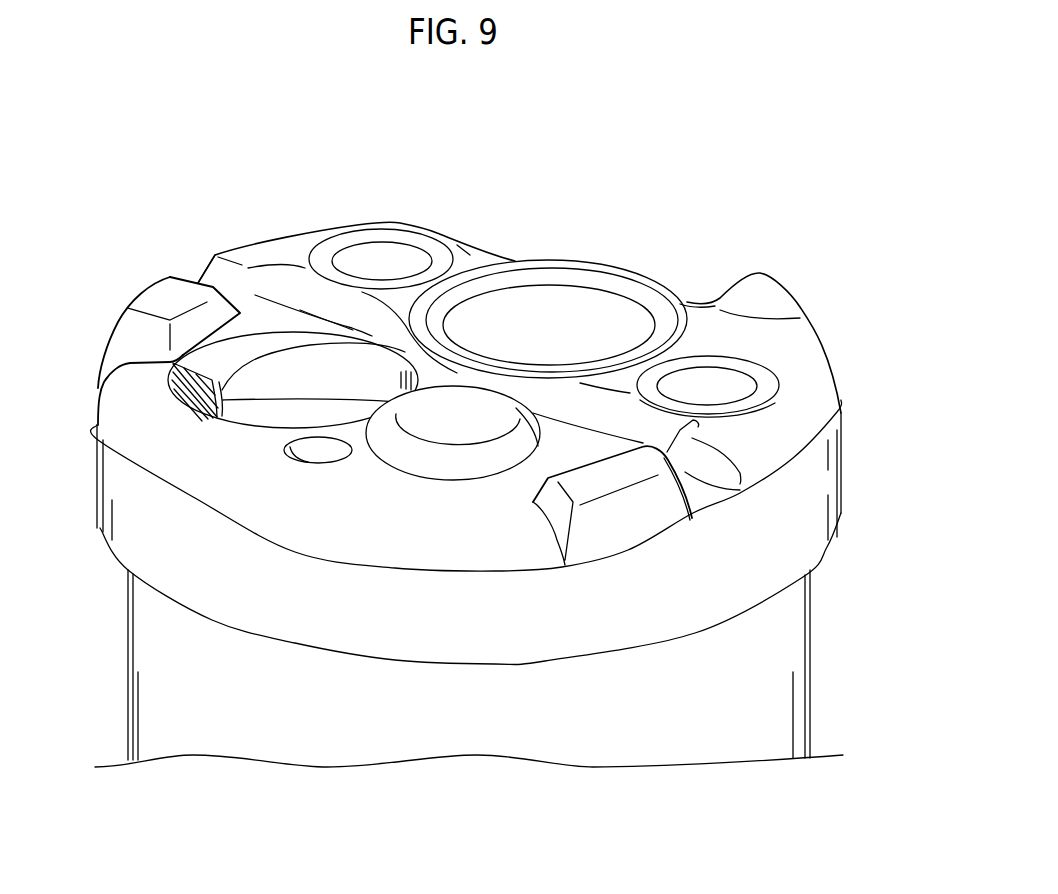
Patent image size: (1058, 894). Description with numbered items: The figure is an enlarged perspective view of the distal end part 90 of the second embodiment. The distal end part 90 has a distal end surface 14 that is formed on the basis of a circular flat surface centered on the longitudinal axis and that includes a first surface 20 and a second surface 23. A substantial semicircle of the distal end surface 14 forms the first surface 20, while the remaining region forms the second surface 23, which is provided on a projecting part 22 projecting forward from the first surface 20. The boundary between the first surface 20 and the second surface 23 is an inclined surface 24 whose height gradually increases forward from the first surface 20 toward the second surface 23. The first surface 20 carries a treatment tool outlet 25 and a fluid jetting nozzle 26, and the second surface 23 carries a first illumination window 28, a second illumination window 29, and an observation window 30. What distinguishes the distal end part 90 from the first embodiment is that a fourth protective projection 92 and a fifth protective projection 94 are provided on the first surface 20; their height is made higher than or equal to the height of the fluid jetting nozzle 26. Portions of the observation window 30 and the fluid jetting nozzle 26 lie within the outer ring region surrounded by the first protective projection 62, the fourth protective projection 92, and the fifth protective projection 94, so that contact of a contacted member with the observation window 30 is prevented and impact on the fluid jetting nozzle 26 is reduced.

The distal end part 90 is at (499, 188).
The distal end surface 14 is at (57, 212).
The second surface 23 is at (256, 253).
The first surface 20 is at (128, 378).
The fourth protective projection 92 is at (163, 298).
The projecting part 22 is at (275, 217).
The inclined surface 24 is at (291, 287).
The first illumination window 28 is at (375, 260).
The observation window 30 is at (550, 310).
The first protective projection 62 is at (758, 285).
The second illumination window 29 is at (713, 380).
The treatment tool outlet 25 is at (280, 420).
The fluid jetting nozzle 26 is at (449, 432).
The fifth protective projection 94 is at (633, 512).